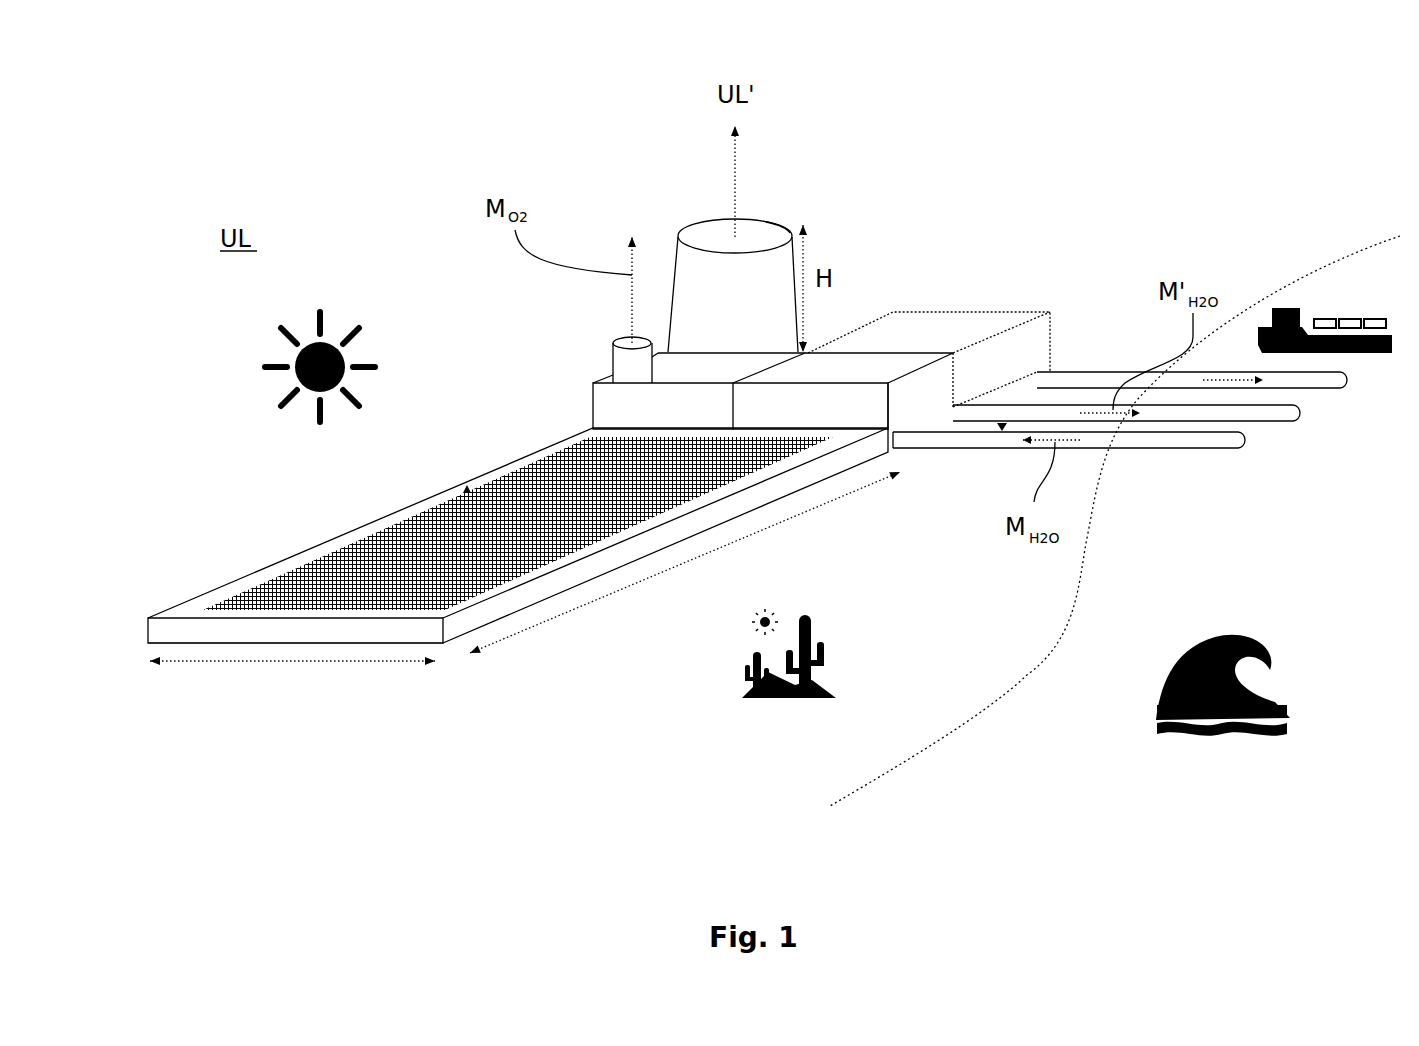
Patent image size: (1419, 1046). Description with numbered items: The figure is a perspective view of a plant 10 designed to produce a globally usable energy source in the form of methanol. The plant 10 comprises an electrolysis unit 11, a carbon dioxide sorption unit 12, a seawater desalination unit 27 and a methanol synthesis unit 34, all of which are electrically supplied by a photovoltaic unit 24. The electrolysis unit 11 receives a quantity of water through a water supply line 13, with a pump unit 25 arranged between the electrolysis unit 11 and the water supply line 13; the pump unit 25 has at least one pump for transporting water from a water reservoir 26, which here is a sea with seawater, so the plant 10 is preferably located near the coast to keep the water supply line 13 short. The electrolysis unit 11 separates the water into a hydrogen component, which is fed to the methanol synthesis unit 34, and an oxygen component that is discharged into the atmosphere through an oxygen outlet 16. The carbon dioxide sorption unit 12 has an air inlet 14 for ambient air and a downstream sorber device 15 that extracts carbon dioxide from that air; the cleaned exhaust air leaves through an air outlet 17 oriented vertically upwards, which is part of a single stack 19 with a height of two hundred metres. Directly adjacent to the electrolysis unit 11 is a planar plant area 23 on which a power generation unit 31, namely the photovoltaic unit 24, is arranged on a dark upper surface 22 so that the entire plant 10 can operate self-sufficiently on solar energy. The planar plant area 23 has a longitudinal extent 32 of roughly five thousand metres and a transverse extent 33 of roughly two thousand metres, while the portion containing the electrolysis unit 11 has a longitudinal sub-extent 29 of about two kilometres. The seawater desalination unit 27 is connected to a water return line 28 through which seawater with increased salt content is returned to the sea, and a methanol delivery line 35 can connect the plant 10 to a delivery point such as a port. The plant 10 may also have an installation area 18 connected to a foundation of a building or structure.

The plant 10 is at (1000, 228).
The electrolysis unit 11 is at (690, 422).
The carbon dioxide sorption unit 12 is at (773, 280).
The water supply line 13 is at (1137, 448).
The air inlet 14 is at (820, 329).
The sorber device 15 is at (746, 347).
The oxygen outlet 16 is at (613, 347).
The air outlet 17 is at (688, 228).
The installation area 18 is at (896, 452).
The stack 19 is at (767, 223).
The surface 22 is at (491, 600).
The planar plant area 23 is at (476, 727).
The photovoltaic unit 24 is at (353, 547).
The pump unit 25 is at (843, 422).
The water reservoir 26 is at (1377, 722).
The seawater desalination unit 27 is at (947, 370).
The water return line 28 is at (1233, 407).
The longitudinal sub-extent 29 is at (939, 454).
The power generation unit 31 is at (469, 503).
The longitudinal extent 32 is at (663, 577).
The transverse extent 33 is at (288, 662).
The methanol synthesis unit 34 is at (960, 335).
The methanol delivery line 35 is at (1130, 373).